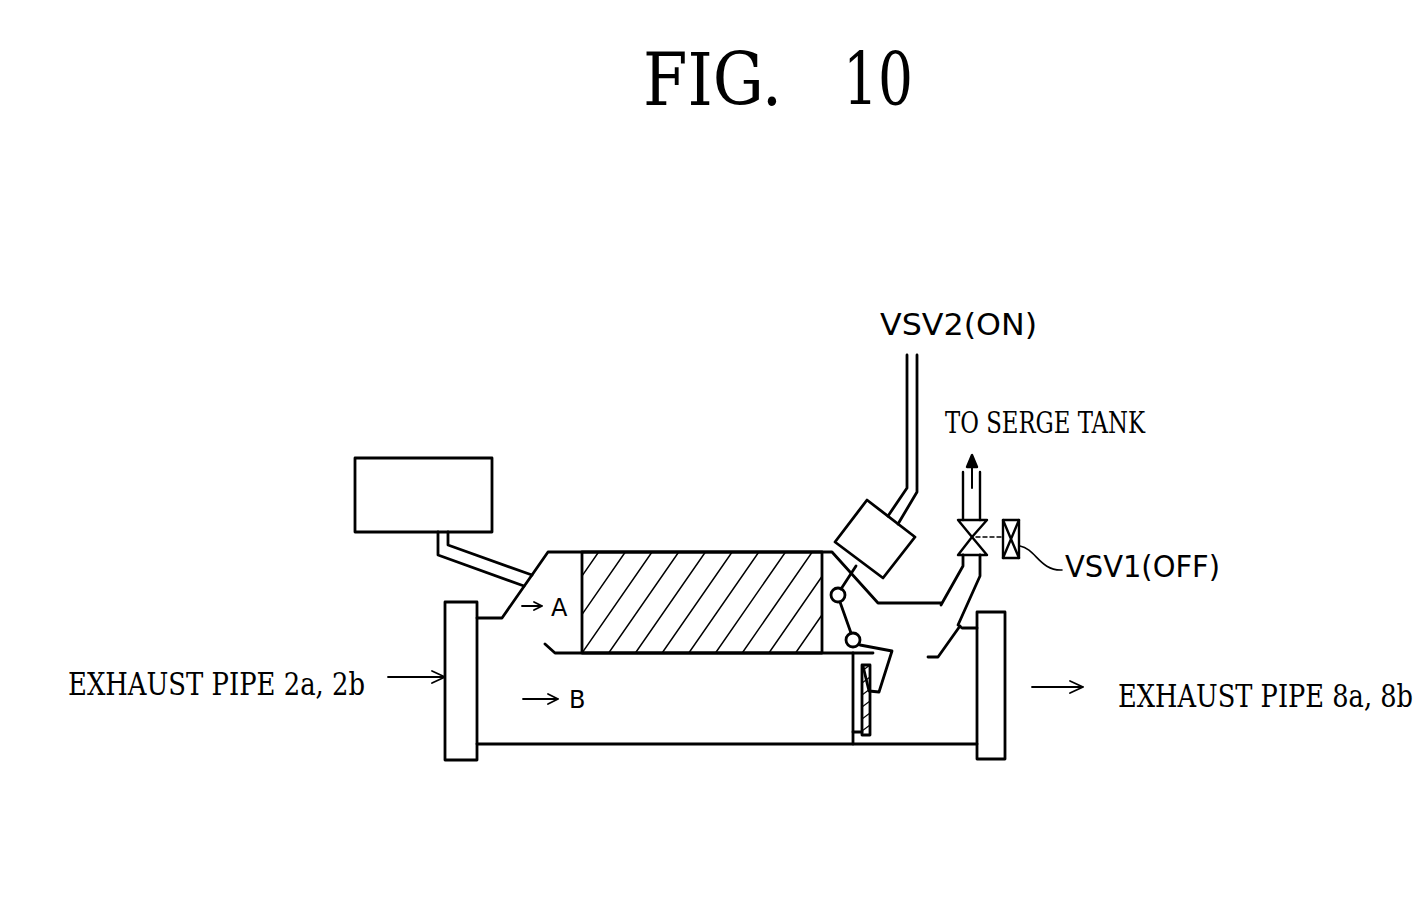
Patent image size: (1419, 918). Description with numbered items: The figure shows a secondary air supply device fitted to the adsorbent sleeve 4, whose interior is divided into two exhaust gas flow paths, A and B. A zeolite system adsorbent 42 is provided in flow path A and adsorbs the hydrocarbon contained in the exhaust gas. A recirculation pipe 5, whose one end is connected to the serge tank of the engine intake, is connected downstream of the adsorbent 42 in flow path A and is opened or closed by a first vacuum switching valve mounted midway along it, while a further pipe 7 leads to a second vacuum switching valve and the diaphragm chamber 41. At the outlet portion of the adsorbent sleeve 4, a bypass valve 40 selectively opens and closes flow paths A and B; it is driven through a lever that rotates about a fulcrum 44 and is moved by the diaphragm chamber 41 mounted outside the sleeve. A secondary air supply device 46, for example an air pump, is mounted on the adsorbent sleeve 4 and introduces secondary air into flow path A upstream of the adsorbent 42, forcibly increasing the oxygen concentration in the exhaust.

The adsorbent sleeve 4 is at (597, 487).
The bypass valve 40 is at (872, 712).
The diaphragm chamber 41 is at (853, 512).
The adsorbent 42 is at (708, 552).
The fulcrum 44 is at (833, 655).
The secondary air supply device 46 is at (416, 458).
The recirculation pipe 5 is at (982, 503).
The pipe 7 is at (917, 388).